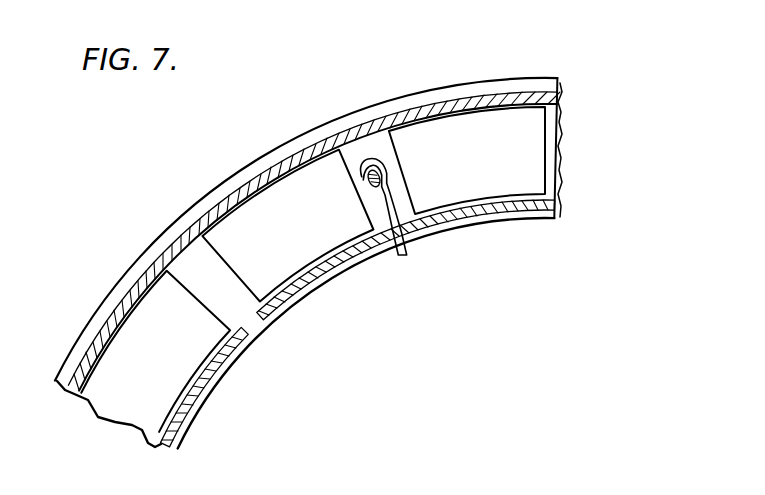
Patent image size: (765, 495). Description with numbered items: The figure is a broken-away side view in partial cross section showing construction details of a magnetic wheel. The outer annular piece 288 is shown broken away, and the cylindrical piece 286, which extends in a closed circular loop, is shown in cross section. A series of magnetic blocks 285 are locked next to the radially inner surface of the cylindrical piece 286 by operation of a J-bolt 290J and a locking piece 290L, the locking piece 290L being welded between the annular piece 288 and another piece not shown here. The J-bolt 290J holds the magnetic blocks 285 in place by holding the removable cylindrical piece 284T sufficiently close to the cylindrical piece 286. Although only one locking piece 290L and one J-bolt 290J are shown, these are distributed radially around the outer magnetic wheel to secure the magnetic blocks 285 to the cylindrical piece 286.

The outer annular piece 288 is at (465, 84).
The cylindrical piece 286 is at (548, 90).
The magnetic blocks 285 is at (527, 152).
The removable cylindrical piece 284T is at (537, 210).
The J-bolt 290J is at (392, 207).
The locking piece 290L is at (368, 184).